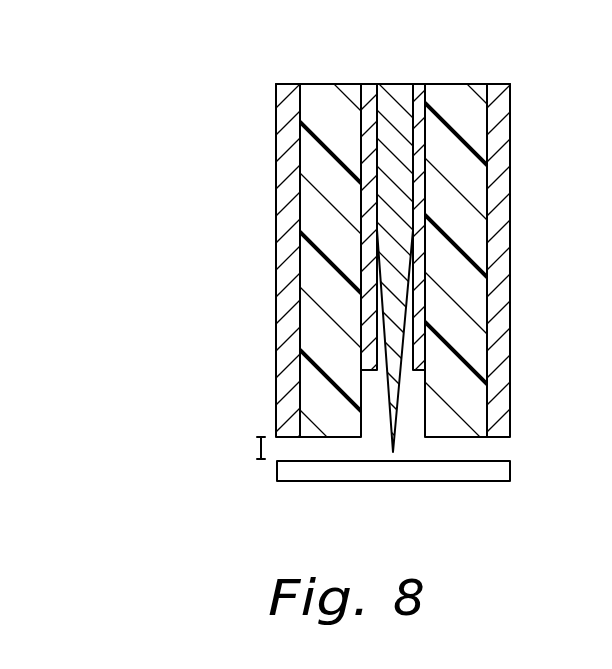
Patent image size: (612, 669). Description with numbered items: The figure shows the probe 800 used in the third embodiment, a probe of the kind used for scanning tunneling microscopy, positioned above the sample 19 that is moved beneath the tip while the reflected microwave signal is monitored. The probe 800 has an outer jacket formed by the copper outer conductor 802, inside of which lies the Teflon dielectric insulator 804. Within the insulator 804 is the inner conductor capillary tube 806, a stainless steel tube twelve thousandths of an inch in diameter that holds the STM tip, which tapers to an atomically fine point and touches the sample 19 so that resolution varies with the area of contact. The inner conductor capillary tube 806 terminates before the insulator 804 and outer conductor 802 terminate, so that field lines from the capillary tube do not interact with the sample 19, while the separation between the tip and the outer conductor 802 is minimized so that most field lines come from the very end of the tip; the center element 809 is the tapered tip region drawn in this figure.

The probe 800 is at (158, 183).
The outer conductor 802 is at (288, 308).
The insulator 804 is at (313, 157).
The center pin 809 is at (397, 107).
The inner conductor capillary tube 806 is at (418, 372).
The sample 19 is at (316, 472).